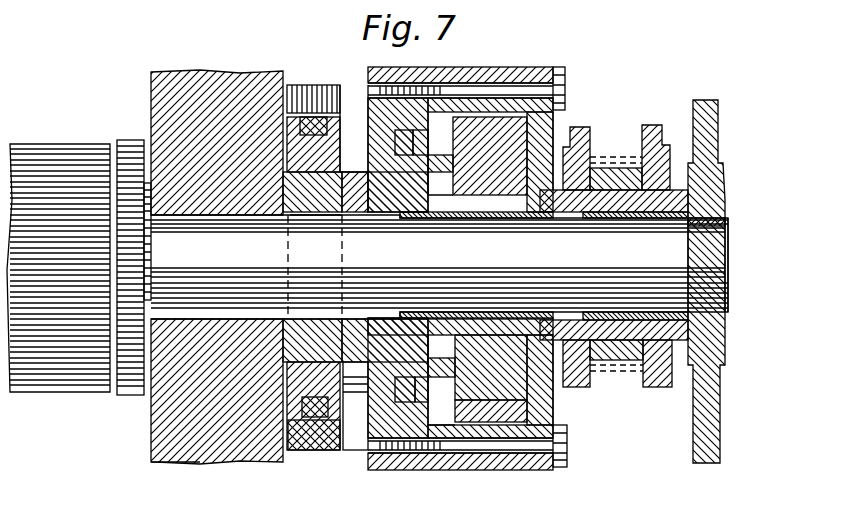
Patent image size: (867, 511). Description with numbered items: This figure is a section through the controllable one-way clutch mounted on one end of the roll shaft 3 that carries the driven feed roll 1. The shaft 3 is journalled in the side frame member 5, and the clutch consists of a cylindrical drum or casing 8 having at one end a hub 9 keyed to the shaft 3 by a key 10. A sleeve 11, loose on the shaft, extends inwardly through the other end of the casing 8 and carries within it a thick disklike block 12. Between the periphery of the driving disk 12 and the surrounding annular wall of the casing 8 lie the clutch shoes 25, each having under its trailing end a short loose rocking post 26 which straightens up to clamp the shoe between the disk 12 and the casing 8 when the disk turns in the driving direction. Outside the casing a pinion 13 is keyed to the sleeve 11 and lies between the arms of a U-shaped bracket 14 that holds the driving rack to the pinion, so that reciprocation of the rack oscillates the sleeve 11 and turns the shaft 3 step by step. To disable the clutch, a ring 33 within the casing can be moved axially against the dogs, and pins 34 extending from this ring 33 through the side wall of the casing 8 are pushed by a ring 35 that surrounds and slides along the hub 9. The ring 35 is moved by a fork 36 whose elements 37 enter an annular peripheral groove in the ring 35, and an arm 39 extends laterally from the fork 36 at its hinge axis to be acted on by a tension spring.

The feed roll 1 is at (37, 153).
The roll shaft 3 is at (680, 284).
The side frame member 5 is at (226, 88).
The drum or casing 8 is at (461, 70).
The hub 9 is at (351, 180).
The key 10 is at (316, 216).
The sleeve 11 is at (558, 188).
The disklike block 12 is at (483, 132).
The pinion 13 is at (606, 178).
The U-shaped bracket 14 is at (582, 128).
The shoe 25 is at (473, 415).
The rocking post 26 is at (500, 385).
The ring 33 is at (395, 390).
The pins 34 is at (174, 486).
The ring 35 is at (303, 147).
The fork 36 is at (308, 93).
The elements 37 is at (340, 120).
The arm 39 is at (348, 400).